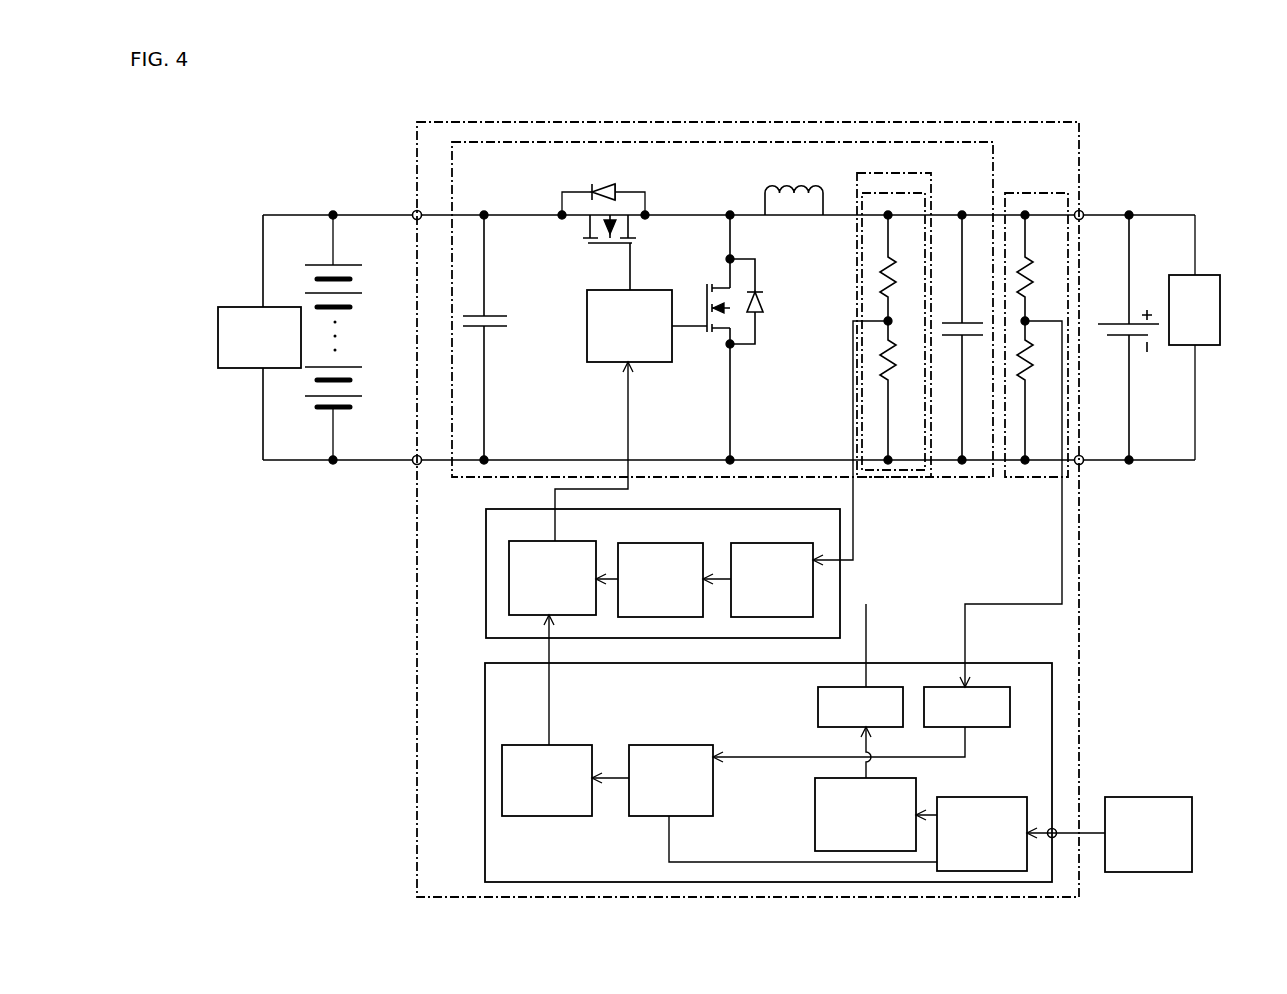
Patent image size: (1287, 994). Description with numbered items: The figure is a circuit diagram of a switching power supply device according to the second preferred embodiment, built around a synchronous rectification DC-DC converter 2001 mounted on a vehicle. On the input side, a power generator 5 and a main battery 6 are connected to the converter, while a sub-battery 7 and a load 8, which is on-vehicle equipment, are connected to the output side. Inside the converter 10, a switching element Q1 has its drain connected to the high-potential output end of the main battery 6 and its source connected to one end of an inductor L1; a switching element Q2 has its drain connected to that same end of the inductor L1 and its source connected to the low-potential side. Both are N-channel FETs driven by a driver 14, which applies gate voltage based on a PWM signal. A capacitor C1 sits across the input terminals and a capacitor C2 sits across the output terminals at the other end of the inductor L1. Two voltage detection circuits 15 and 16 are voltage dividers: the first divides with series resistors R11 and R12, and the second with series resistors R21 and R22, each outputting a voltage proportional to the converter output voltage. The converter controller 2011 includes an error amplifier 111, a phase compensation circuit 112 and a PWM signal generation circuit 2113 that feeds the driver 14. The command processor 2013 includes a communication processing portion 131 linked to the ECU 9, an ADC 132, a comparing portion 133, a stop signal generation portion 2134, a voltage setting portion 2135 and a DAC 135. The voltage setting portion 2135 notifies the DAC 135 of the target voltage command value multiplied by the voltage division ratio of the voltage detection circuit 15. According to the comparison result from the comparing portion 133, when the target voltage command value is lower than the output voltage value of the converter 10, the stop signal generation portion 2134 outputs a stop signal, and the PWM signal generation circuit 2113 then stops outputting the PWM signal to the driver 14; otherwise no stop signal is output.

The power generator 5 is at (268, 305).
The main battery 6 is at (345, 265).
The sub-battery 7 is at (1107, 322).
The load 8 is at (1212, 275).
The ECU 9 is at (1180, 797).
The converter 10 is at (993, 168).
The driver 14 is at (597, 363).
The voltage detection circuit 15 is at (894, 354).
The voltage detection circuit 16 is at (1036, 362).
The error amplifier 111 is at (778, 543).
The phase compensation circuit 112 is at (665, 617).
The communication processing portion 131 is at (1005, 797).
The ADC 132 is at (993, 687).
The comparing portion 133 is at (675, 745).
The DAC 135 is at (885, 687).
The DC-DC converter 2001 is at (1079, 160).
The converter controller 2011 is at (630, 513).
The command processor 2013 is at (766, 743).
The PWM signal generation circuit 2113 is at (509, 600).
The stop signal generation portion 2134 is at (557, 816).
The voltage setting portion 2135 is at (815, 800).
The switching element Q1 is at (601, 237).
The switching element Q2 is at (717, 337).
The inductor L1 is at (794, 191).
The capacitor C1 is at (486, 337).
The capacitor C2 is at (964, 337).
The resistor R11 is at (899, 268).
The resistor R12 is at (899, 390).
The resistor R21 is at (1036, 268).
The resistor R22 is at (1036, 390).